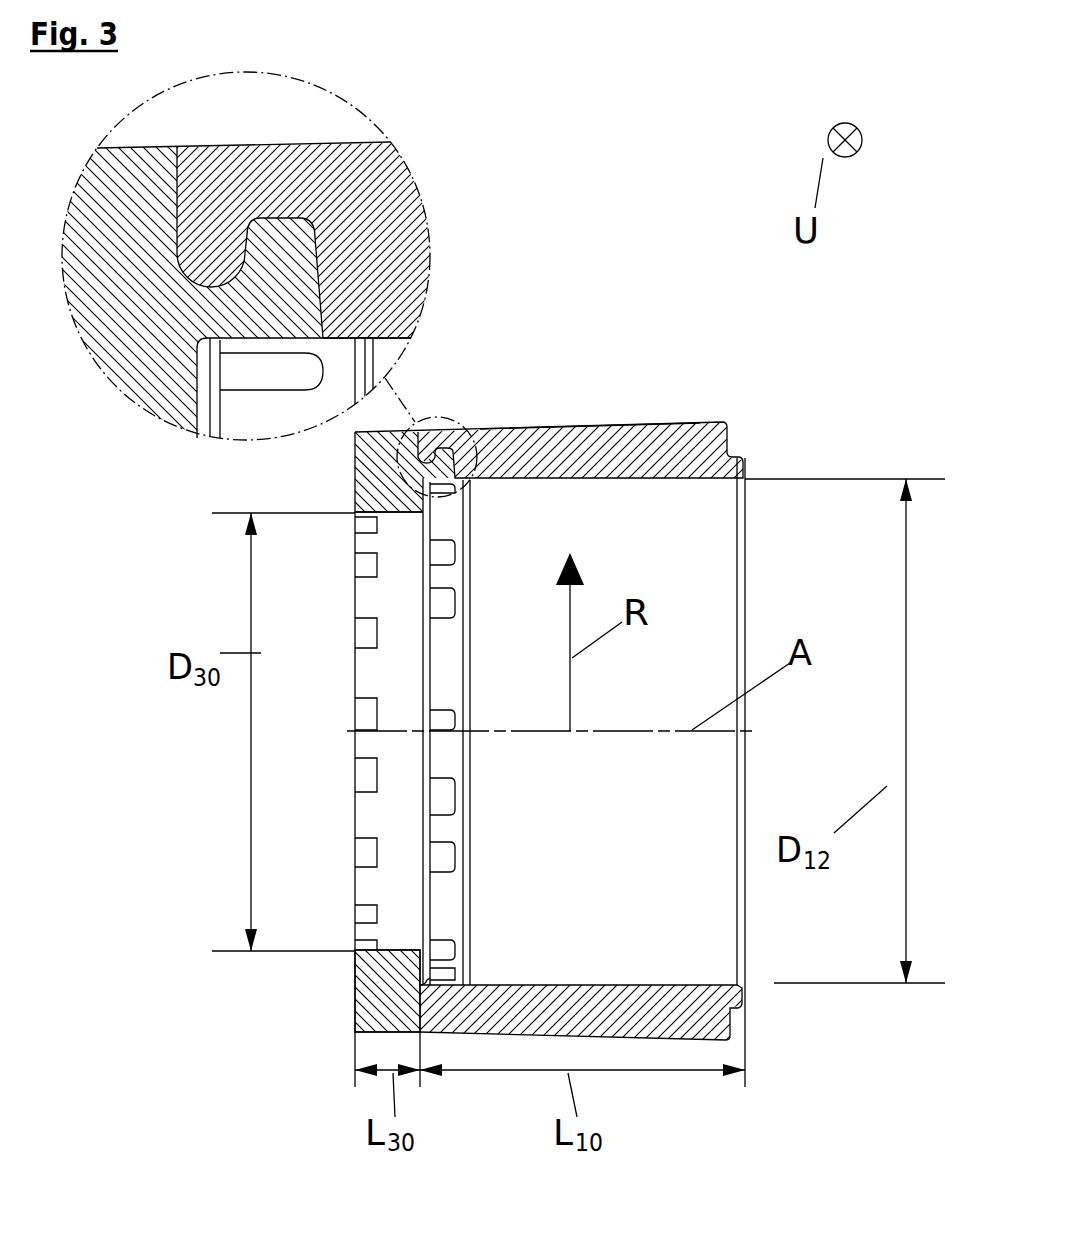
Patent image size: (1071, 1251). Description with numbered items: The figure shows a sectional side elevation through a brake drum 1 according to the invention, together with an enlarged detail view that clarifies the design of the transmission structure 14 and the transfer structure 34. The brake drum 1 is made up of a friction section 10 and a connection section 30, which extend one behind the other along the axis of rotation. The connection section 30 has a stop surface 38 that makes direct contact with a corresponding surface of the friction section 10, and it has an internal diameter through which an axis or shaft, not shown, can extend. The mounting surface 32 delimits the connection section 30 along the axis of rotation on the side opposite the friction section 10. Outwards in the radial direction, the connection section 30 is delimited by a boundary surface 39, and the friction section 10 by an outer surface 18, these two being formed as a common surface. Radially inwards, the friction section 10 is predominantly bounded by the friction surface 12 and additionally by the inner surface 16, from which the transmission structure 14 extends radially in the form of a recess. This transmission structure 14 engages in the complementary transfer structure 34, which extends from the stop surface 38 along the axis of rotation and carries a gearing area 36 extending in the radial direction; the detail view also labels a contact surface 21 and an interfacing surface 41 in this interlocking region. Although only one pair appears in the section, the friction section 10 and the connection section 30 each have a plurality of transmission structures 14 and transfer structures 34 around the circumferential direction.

In FIG. 3A, the brake drum 1 is at (712, 340).
In FIG. 3A, the friction section 10 is at (752, 1015).
In FIG. 3A, the friction surface 12 is at (538, 480).
In FIG. 3B, the transmission structure 14 is at (273, 200).
In FIG. 3B, the inner surface 16 is at (350, 337).
In FIG. 3A, the outer surface 18 is at (602, 423).
In FIG. 3B, the contact surface 21 is at (223, 283).
In FIG. 3A, the connection section 30 is at (312, 1050).
In FIG. 3A, the mounting surface 32 is at (365, 496).
In FIG. 3B, the transfer structure 34 is at (280, 272).
In FIG. 3B, the gearing area 36 is at (284, 278).
In FIG. 3A, the stop surface 38 is at (418, 1013).
In FIG. 3A, the boundary surface 39 is at (393, 436).
In FIG. 3B, the interfacing surface 41 is at (211, 270).